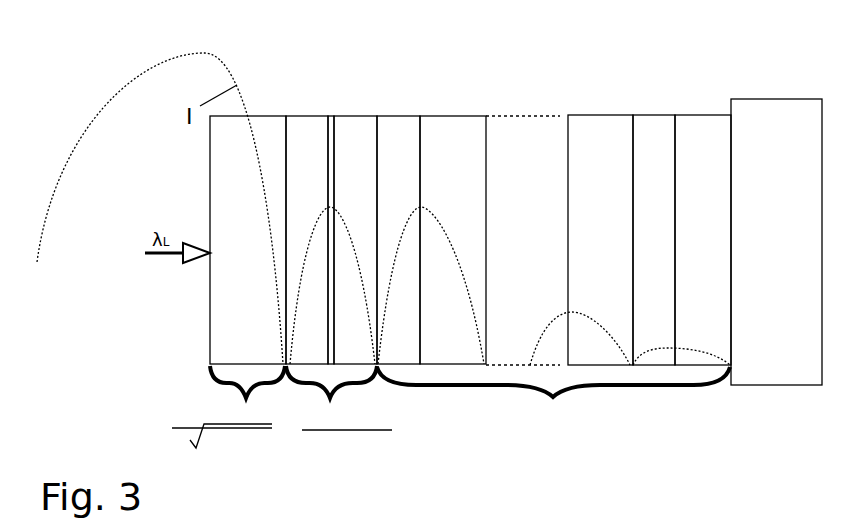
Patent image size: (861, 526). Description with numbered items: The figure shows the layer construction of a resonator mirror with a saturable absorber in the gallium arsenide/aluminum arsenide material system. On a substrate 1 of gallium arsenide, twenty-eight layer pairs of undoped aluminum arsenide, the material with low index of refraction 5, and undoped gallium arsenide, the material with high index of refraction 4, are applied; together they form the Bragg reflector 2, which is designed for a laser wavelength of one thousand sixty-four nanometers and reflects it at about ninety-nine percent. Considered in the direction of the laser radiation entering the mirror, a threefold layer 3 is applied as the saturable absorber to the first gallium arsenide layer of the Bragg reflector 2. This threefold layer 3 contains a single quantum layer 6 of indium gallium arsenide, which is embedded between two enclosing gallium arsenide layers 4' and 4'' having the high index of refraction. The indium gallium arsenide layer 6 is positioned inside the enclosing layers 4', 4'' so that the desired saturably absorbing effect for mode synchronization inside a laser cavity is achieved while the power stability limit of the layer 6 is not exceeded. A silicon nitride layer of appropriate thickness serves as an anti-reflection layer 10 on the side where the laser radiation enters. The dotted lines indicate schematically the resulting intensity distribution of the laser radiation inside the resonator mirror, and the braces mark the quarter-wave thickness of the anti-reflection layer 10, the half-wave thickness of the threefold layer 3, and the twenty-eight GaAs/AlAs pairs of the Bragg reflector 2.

The substrate 1 is at (770, 363).
The Bragg reflector 2 is at (660, 388).
The threefold layer 3 is at (372, 385).
The material with high index of refraction 4 is at (408, 197).
The high-index layer 4' is at (296, 214).
The high-index layer 4'' is at (375, 214).
The material with low index of refraction 5 is at (455, 124).
The single quantum layer 6 is at (332, 116).
The anti-reflection layer 10 is at (228, 352).